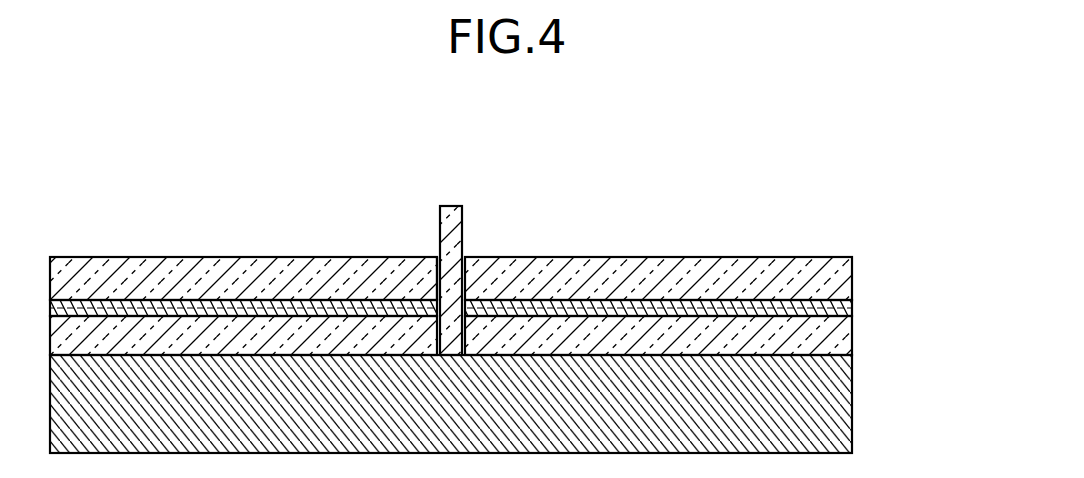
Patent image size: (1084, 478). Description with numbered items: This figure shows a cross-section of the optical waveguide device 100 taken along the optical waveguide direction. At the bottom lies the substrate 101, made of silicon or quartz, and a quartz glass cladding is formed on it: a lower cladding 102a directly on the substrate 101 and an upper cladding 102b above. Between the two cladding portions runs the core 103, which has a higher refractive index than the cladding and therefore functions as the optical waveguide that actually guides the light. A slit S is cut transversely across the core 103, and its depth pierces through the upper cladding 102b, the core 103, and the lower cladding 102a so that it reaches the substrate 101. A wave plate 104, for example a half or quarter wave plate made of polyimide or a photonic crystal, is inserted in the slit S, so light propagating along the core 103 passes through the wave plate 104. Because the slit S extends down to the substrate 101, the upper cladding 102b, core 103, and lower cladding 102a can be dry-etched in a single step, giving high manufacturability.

The optical waveguide device 100 is at (712, 135).
The substrate 101 is at (840, 396).
The lower cladding 102a is at (845, 334).
The upper cladding 102b is at (845, 267).
The core 103 is at (848, 306).
The wave plate 104 is at (453, 206).
The slit S is at (430, 247).